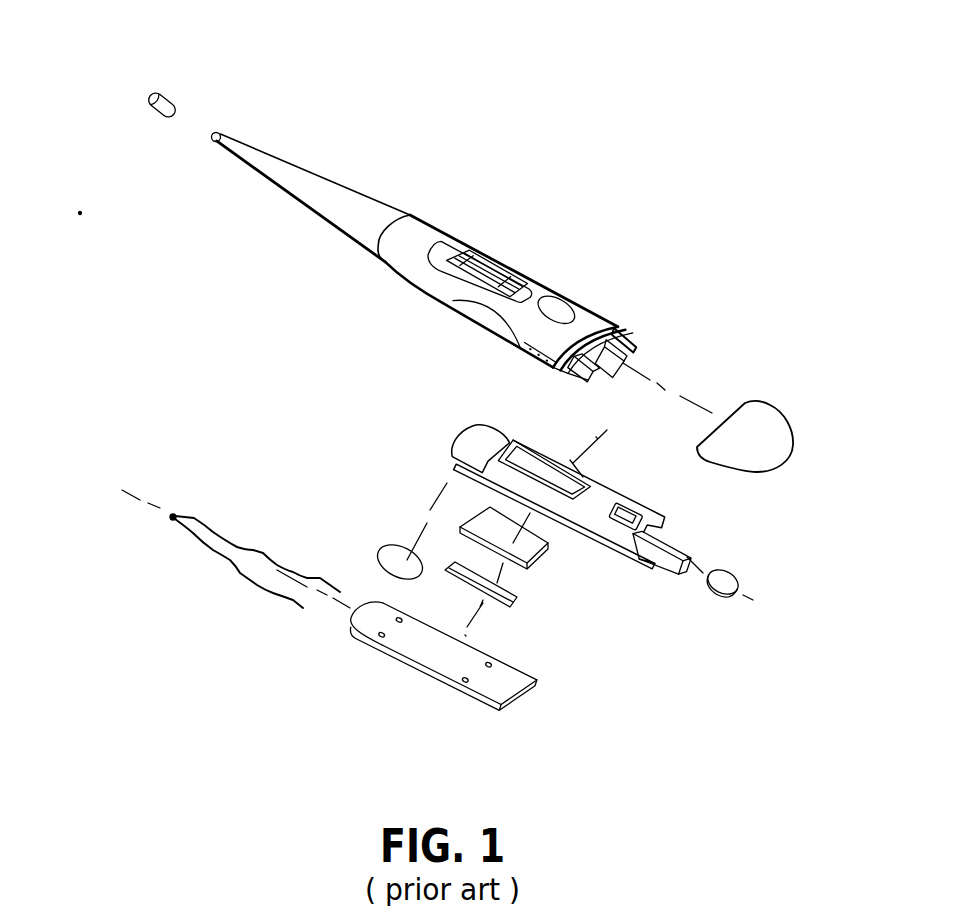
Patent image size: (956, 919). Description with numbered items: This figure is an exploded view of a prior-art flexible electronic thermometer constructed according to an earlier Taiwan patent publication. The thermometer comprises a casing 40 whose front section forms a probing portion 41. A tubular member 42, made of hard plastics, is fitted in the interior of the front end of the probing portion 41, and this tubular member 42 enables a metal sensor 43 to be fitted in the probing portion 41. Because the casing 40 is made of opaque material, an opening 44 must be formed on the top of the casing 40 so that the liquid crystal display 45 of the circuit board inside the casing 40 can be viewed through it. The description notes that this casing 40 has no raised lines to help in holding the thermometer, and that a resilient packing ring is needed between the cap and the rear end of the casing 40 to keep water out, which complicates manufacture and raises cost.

The casing 40 is at (435, 237).
The probing portion 41 is at (307, 182).
The tubular member 42 is at (214, 133).
The metal sensor 43 is at (163, 97).
The opening 44 is at (511, 258).
The liquid crystal display 45 is at (573, 483).